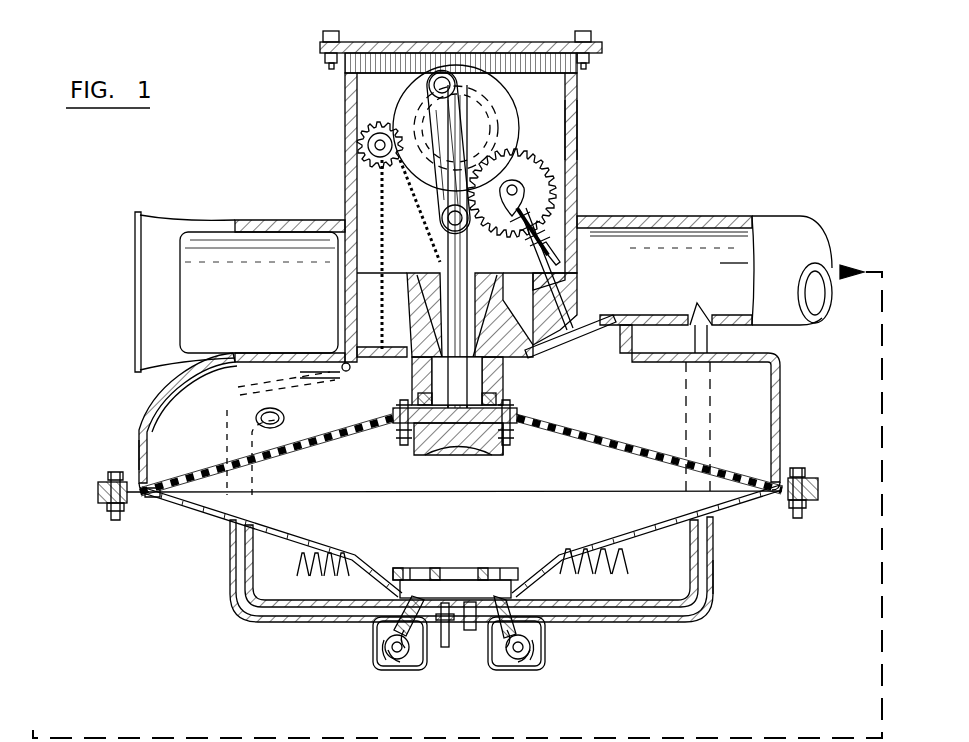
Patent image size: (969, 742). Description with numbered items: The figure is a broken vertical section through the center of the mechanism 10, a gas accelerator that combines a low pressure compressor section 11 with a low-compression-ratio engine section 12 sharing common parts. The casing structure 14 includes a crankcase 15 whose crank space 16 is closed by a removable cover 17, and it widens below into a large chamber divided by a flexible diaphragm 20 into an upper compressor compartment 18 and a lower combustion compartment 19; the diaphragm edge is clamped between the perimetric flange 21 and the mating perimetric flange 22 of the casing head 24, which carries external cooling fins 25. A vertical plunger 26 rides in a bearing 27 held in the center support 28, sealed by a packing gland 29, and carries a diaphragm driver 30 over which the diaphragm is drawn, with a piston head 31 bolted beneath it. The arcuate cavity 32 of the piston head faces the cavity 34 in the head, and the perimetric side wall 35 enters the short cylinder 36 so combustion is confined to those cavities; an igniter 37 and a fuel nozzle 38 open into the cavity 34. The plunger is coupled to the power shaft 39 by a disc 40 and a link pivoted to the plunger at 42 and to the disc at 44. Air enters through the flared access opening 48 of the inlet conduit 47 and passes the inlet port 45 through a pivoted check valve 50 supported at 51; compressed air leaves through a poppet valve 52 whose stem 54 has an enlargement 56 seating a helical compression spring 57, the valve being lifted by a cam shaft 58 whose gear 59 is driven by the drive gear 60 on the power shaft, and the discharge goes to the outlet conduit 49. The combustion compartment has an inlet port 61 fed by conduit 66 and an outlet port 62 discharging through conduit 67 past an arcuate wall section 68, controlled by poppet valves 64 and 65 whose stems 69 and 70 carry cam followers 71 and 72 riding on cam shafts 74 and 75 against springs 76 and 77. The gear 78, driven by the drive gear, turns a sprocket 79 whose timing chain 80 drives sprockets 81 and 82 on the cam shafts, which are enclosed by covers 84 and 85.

The mechanism 10 is at (620, 43).
The compressor section 11 is at (146, 438).
The engine section 12 is at (200, 512).
The casing structure 14 is at (590, 112).
The crankcase 15 is at (573, 130).
The crank space 16 is at (562, 155).
The cover 17 is at (372, 42).
The compressor compartment 18 is at (160, 400).
The combustion compartment 19 is at (218, 512).
The diaphragm 20 is at (268, 460).
The perimetric flange 21 is at (102, 484).
The mating perimetric flange 22 is at (103, 500).
The casing head 24 is at (160, 505).
The cooling fins 25 is at (302, 562).
The plunger 26 is at (505, 366).
The bearing 27 is at (486, 392).
The center support 28 is at (412, 363).
The packing gland 29 is at (416, 398).
The diaphragm driver 30 is at (518, 416).
The piston head 31 is at (499, 458).
The arcuate cavity 32 is at (442, 458).
The cavity 34 is at (460, 568).
The perimetric side wall 35 is at (415, 440).
The short cylinder 36 is at (405, 562).
The igniter 37 is at (443, 648).
The nozzle 38 is at (471, 632).
The power shaft 39 is at (462, 128).
The disc 40 is at (478, 78).
The pivot connection to plunger 42 is at (442, 224).
The pivot connection to disc 44 is at (446, 78).
The inlet port 45 is at (265, 358).
The inlet conduit 47 is at (428, 100).
The access opening 48 is at (135, 232).
The outlet conduit 49 is at (765, 235).
The valve 50 is at (245, 366).
The pivot 51 is at (345, 372).
The poppet valve 52 is at (588, 332).
The stem 54 is at (558, 300).
The enlargement 56 is at (512, 236).
The helical compression spring 57 is at (548, 244).
The cam shaft 58 is at (515, 186).
The gear 59 is at (552, 190).
The drive gear 60 is at (482, 126).
The inlet port 61 is at (418, 568).
The outlet port 62 is at (503, 568).
The poppet valve 64 is at (440, 562).
The poppet valve 65 is at (492, 562).
The conduit 66 is at (230, 598).
The conduit 67 is at (713, 606).
The arcuate wall section 68 is at (696, 306).
The stem 69 is at (410, 595).
The stem 70 is at (500, 595).
The cam follower 71 is at (380, 638).
The cam follower 72 is at (535, 645).
The cam shaft 74 is at (390, 670).
The cam shaft 75 is at (522, 670).
The helical compression spring 76 is at (370, 632).
The helical compression spring 77 is at (520, 632).
The gear 78 is at (378, 125).
The sprocket 79 is at (366, 148).
The timing chain 80 is at (384, 240).
The sprocket 81 is at (385, 660).
The sprocket 82 is at (540, 665).
The cover 84 is at (372, 652).
The cover 85 is at (540, 655).